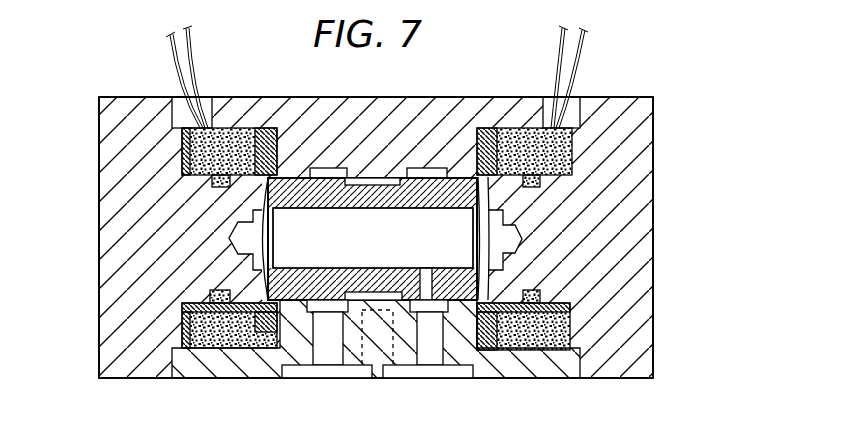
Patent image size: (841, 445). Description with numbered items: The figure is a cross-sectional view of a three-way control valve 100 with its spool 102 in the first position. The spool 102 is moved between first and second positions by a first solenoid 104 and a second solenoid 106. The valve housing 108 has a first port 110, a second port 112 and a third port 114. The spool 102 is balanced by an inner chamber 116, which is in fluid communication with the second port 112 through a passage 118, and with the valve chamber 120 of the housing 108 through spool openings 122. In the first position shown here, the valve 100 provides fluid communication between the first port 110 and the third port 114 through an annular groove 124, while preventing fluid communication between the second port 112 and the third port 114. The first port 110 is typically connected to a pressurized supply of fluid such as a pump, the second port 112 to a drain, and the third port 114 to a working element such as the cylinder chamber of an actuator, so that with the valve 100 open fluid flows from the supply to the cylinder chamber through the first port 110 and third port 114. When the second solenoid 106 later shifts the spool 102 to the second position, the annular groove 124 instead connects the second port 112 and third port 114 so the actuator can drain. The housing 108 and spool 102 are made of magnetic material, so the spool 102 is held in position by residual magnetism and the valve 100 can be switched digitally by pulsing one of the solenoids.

The three-way control valve 100 is at (668, 323).
The spool 102 is at (375, 208).
The first solenoid 104 is at (176, 149).
The second solenoid 106 is at (583, 152).
The valve housing 108 is at (637, 249).
The first port 110 is at (352, 378).
The second port 112 is at (470, 378).
The third port 114 is at (382, 382).
The inner chamber 116 is at (331, 250).
The passage 118 is at (443, 315).
The valve chamber 120 is at (497, 270).
The spool openings 122 is at (473, 233).
The annular groove 124 is at (362, 300).